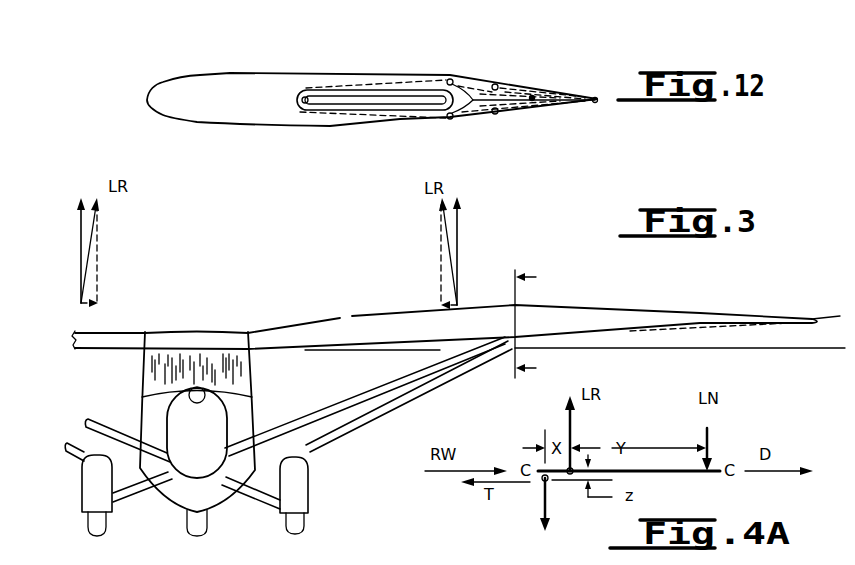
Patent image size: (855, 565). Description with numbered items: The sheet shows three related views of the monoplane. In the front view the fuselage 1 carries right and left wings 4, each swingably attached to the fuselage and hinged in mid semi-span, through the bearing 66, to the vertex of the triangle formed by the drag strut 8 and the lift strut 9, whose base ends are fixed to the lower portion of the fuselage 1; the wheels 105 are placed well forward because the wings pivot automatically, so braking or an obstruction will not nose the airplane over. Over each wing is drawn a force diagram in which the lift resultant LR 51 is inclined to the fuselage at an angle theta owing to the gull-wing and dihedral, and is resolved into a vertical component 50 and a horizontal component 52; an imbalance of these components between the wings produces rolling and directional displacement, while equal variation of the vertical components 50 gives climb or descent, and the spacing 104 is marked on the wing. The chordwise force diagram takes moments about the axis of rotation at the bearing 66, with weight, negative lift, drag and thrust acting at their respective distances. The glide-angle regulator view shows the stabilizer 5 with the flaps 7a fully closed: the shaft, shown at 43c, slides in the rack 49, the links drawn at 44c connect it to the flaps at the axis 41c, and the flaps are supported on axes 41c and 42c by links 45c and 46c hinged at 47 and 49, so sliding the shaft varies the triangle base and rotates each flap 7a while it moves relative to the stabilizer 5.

In FIG. 12, the stabilizer 5 is at (181, 91).
In FIG. 12, the rack 49 is at (302, 98).
In FIG. 12, the shaft position, fully closed 43c is at (309, 97).
In FIG. 12, the axis of rotation 41, fully closed position 41c is at (449, 78).
In FIG. 12, the link 45, fully closed position 45c is at (468, 86).
In FIG. 12, the axis of rotation 42, fully closed position 42c is at (497, 84).
In FIG. 12, the link 46, fully closed position 46c is at (538, 92).
In FIG. 12, the hinge point 47 is at (532, 101).
In FIG. 12, the flap 7a is at (481, 108).
In FIG. 12, the link 44, fully closed position 44c is at (424, 112).
In FIG. 3, the vertical component of force 50 is at (75, 206).
In FIG. 3, the resultant LR 51 is at (94, 235).
In FIG. 3, the horizontal component of force 52 is at (100, 308).
In FIG. 3, the wing 4 is at (116, 340).
In FIG. 3, the dimension 104 is at (544, 314).
In FIG. 3, the drag strut 8 is at (113, 435).
In FIG. 3, the lift strut 9 is at (82, 458).
In FIG. 3, the fuselage 1 is at (241, 408).
In FIG. 3, the wheels 105 is at (96, 538).
In FIG. 4A, the bearing 66 is at (548, 481).